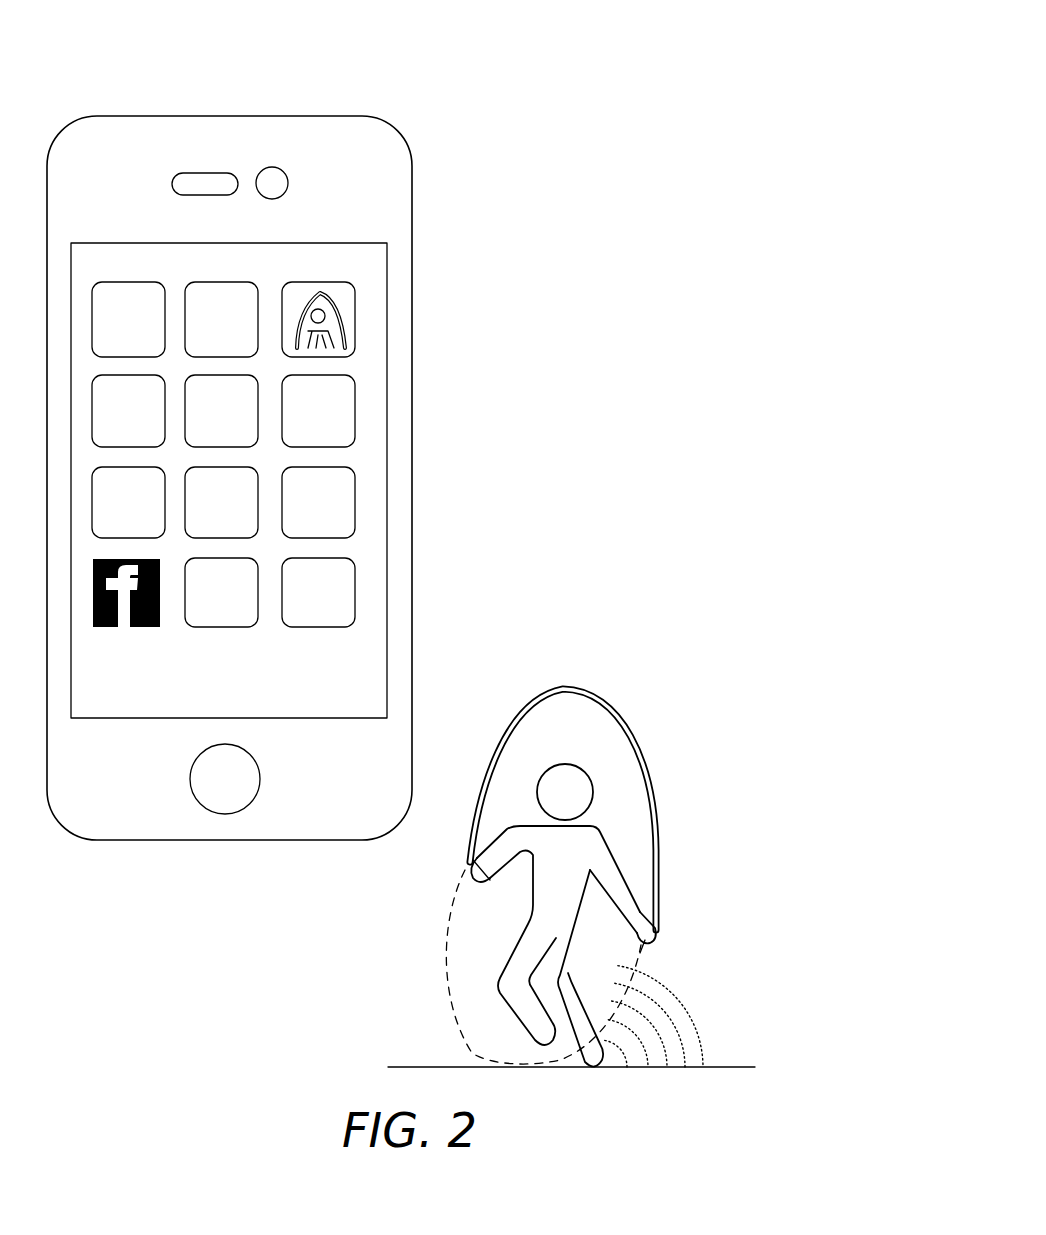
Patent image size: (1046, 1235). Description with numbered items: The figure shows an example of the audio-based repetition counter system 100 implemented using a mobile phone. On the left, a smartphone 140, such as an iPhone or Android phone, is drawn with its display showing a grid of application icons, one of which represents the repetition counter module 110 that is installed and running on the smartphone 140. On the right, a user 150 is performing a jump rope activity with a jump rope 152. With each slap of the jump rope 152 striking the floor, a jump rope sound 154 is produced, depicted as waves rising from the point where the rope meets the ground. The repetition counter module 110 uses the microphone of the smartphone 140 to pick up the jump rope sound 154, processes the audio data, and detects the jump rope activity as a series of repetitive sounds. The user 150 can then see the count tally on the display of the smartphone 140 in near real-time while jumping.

The audio-based repetition counter system 100 is at (230, 67).
The repetition counter module 110 is at (357, 313).
The smartphone 140 is at (130, 175).
The user 150 is at (598, 790).
The jump rope 152 is at (658, 838).
The jump rope sound 154 is at (684, 1003).